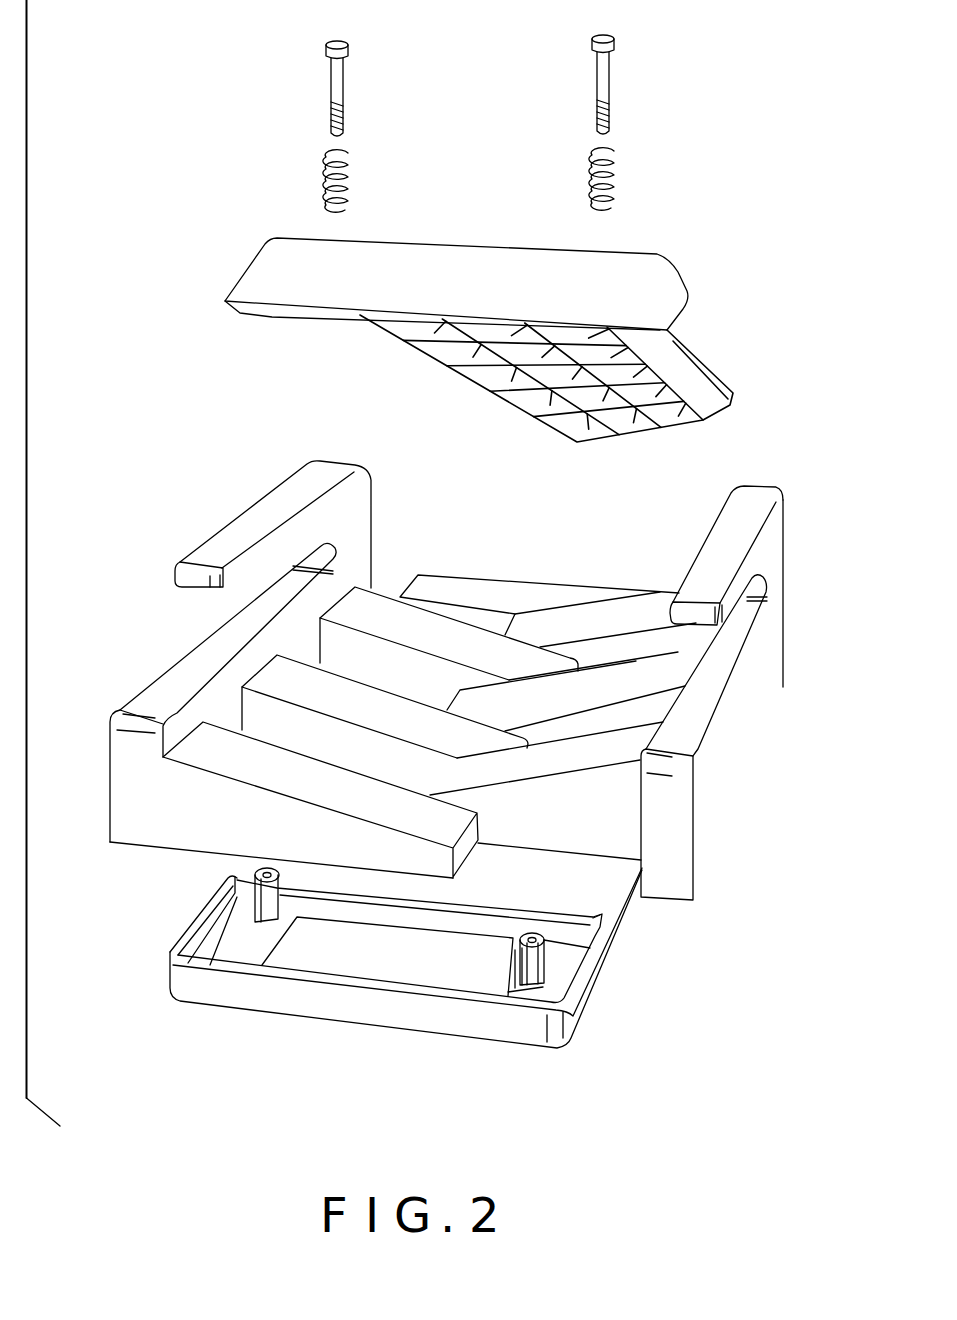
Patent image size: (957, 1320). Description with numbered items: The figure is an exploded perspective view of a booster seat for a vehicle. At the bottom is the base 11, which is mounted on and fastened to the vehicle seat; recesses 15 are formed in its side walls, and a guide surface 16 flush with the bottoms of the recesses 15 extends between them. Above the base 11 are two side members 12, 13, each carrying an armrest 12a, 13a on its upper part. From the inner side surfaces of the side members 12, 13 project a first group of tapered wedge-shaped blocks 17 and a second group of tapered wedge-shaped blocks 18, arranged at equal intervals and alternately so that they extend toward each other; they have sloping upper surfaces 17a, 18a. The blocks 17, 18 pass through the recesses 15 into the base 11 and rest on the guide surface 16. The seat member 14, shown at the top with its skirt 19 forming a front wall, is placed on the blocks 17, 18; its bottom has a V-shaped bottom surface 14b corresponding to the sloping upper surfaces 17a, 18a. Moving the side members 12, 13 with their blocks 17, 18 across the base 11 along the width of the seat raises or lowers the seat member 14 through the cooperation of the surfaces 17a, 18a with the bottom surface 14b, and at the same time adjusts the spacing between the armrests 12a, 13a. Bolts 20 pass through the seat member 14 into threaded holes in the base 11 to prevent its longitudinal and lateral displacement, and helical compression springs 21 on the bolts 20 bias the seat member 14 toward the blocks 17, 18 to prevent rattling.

The base 11 is at (411, 983).
The side member 12 is at (265, 669).
The armrest 12a is at (262, 516).
The side member 13 is at (734, 665).
The armrest 13a is at (745, 503).
The seat member 14 is at (517, 338).
The V-shaped bottom surface 14b is at (606, 420).
The recesses 15 is at (225, 876).
The guide surface 16 is at (598, 875).
The wedge-shaped blocks 17 is at (372, 610).
The sloping upper surface 17a is at (455, 632).
The wedge-shaped blocks 18 is at (615, 622).
The sloping upper surface 18a is at (538, 632).
The skirt 19 is at (455, 262).
The bolts 20 is at (328, 89).
The helical compression springs 21 is at (326, 183).